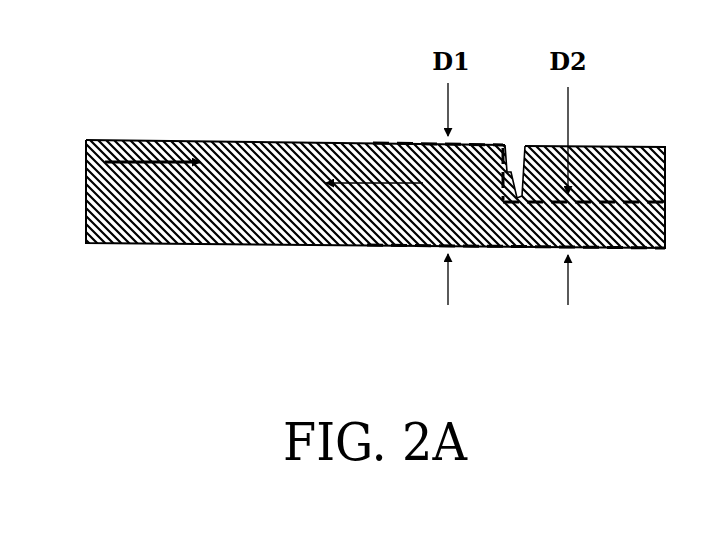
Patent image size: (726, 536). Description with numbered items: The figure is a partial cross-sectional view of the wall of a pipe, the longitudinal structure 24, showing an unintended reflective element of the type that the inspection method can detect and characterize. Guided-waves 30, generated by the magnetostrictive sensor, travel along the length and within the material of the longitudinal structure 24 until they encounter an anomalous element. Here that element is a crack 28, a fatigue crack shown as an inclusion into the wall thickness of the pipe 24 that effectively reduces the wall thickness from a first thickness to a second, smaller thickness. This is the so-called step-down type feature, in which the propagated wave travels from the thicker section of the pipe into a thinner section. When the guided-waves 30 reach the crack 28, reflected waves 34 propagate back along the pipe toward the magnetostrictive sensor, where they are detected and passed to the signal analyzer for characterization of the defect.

The longitudinal structure 24 is at (247, 245).
The crack 28 is at (513, 160).
The guided-waves 30 is at (143, 165).
The reflected waves 34 is at (340, 186).